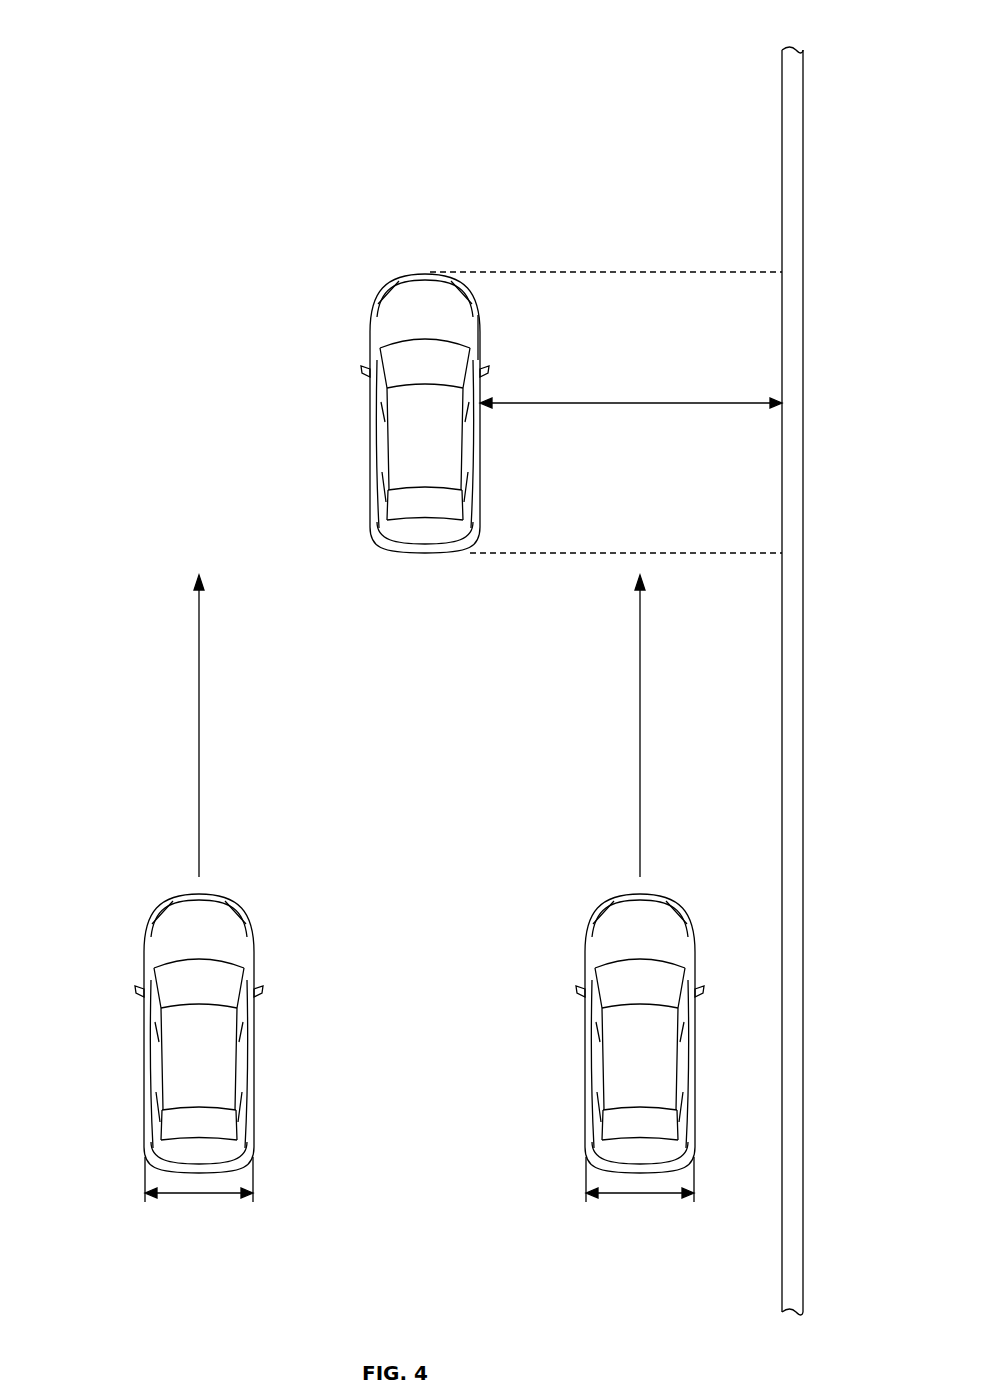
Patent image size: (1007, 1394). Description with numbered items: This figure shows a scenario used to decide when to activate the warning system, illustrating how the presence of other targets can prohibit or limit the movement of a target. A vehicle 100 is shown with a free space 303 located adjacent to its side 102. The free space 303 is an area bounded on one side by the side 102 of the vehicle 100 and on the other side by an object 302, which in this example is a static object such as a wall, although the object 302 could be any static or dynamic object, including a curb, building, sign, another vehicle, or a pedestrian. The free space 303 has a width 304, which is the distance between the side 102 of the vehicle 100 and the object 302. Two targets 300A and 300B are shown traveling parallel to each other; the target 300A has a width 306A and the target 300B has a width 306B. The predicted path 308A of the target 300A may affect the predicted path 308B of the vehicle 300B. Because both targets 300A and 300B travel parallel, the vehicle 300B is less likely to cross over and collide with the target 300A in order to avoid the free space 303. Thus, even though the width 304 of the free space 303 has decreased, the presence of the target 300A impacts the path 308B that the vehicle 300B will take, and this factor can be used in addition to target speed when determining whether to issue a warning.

The vehicle 100 is at (425, 273).
The side 102 is at (480, 335).
The object 302 is at (782, 110).
The free space 303 is at (704, 342).
The width 304 is at (620, 402).
The target 300A is at (146, 1075).
The target 300B is at (587, 1075).
The width 306A is at (199, 1198).
The width 306B is at (640, 1198).
The predicted path 308A is at (198, 745).
The predicted path 308B is at (639, 745).